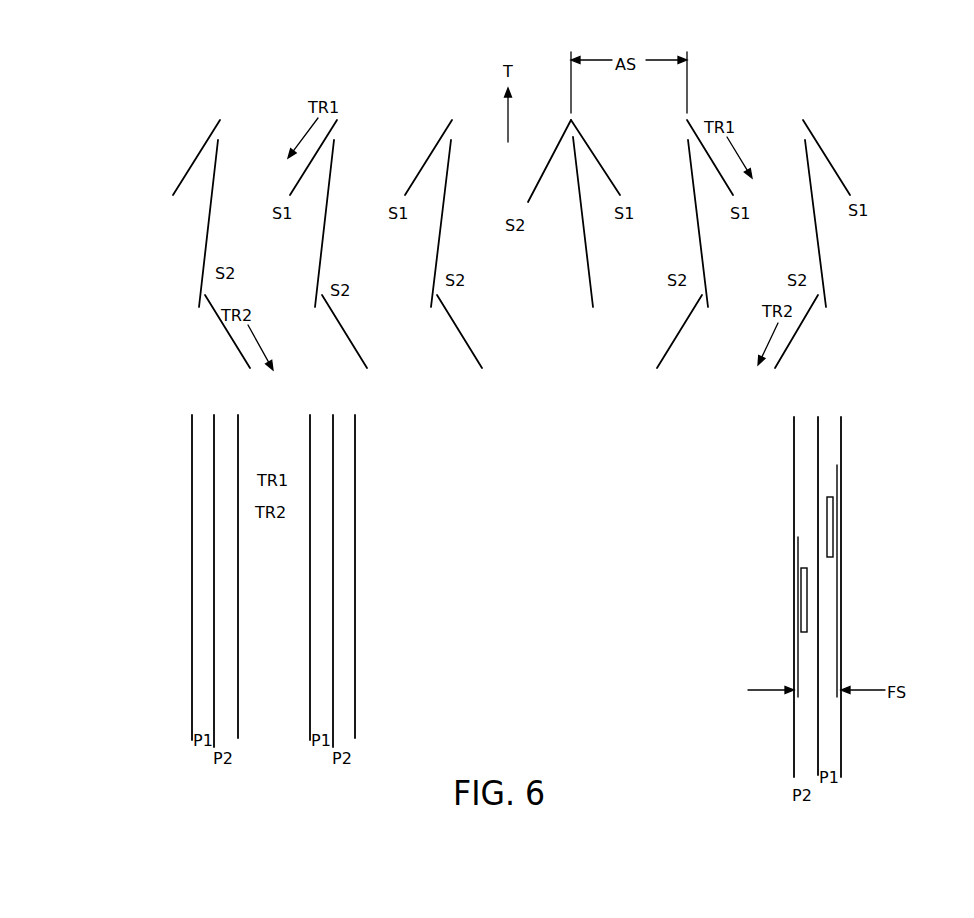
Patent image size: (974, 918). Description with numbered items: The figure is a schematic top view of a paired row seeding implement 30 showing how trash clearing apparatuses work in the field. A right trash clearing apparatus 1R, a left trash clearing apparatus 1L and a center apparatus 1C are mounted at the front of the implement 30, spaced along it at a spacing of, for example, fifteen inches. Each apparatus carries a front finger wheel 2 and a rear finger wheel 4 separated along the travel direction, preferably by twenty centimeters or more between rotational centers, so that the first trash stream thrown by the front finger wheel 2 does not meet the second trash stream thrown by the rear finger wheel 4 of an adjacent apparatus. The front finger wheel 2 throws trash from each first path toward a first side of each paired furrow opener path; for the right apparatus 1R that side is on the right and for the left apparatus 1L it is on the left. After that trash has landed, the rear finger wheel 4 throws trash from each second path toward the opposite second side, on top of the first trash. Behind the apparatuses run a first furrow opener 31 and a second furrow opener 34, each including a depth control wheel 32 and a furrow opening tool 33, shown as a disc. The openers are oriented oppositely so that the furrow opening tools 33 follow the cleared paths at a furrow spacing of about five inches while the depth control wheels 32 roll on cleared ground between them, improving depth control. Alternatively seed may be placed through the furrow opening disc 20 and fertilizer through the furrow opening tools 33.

The front finger wheel 2 is at (198, 155).
The rear finger wheel 4 is at (226, 333).
The furrow opening disc 20 is at (205, 240).
The paired row seeding implement 30 is at (925, 88).
The left trash clearing apparatus 1L is at (432, 322).
The center trash clearing apparatus 1C is at (581, 316).
The right trash clearing apparatus 1R is at (693, 327).
The first furrow opener 31 is at (860, 528).
The depth control wheel 32 is at (827, 504).
The furrow opening tool 33 is at (838, 476).
The second furrow opener 34 is at (778, 608).